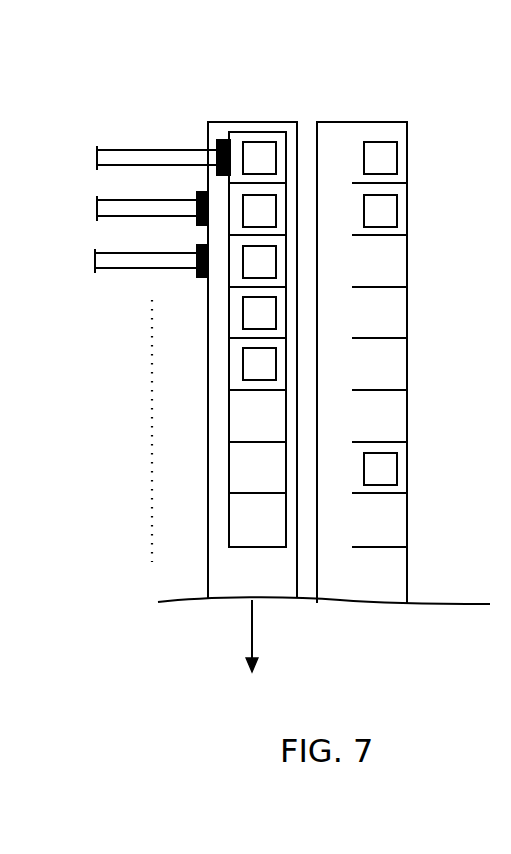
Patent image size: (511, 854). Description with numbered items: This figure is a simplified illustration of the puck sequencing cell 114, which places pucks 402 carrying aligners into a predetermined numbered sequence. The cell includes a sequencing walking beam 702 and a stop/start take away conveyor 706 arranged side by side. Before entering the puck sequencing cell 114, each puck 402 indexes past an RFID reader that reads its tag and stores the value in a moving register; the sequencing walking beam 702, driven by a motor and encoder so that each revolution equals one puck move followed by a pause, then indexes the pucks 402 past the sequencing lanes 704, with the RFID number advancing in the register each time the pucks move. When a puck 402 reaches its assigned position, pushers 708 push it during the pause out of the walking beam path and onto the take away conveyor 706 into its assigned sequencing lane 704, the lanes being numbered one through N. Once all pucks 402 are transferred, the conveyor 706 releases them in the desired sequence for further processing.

The puck sequencing cell 114 is at (401, 80).
The puck 402 is at (243, 273).
The sequencing walking beam 702 is at (220, 587).
The sequencing lane 704 is at (397, 263).
The stop/start take away conveyor 706 is at (358, 583).
The pushers 708 is at (133, 150).